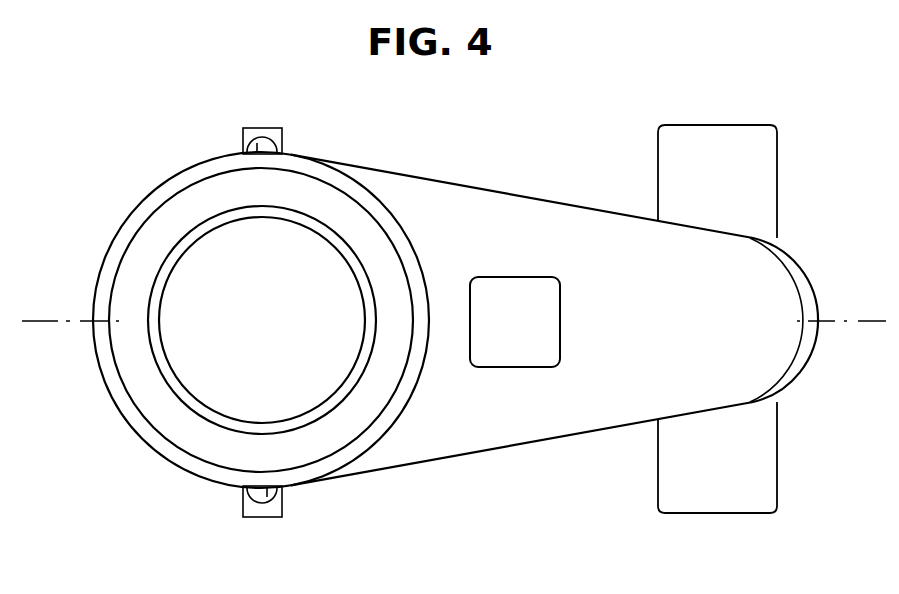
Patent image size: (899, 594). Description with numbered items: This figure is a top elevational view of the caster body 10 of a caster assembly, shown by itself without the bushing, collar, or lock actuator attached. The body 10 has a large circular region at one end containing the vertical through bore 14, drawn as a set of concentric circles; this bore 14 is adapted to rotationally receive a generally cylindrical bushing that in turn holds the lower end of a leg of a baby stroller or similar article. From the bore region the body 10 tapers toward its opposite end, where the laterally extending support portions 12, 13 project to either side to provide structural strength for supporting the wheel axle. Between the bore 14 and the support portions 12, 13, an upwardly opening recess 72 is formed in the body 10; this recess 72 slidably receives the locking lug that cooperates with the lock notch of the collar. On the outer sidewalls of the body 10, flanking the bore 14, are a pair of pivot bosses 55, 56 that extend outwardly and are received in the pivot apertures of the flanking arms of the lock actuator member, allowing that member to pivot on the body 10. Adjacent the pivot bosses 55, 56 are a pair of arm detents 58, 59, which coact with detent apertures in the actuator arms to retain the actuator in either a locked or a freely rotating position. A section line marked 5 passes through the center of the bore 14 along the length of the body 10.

The caster body 10 is at (545, 452).
The support portion 12 is at (745, 493).
The support portion 13 is at (753, 143).
The vertical through bore 14 is at (185, 361).
The pivot boss 55 is at (245, 515).
The pivot boss 56 is at (278, 128).
The arm detent 58 is at (268, 493).
The arm detent 59 is at (256, 151).
The upwardly opening recess 72 is at (530, 285).
The section line 5- 5 is at (38, 333).